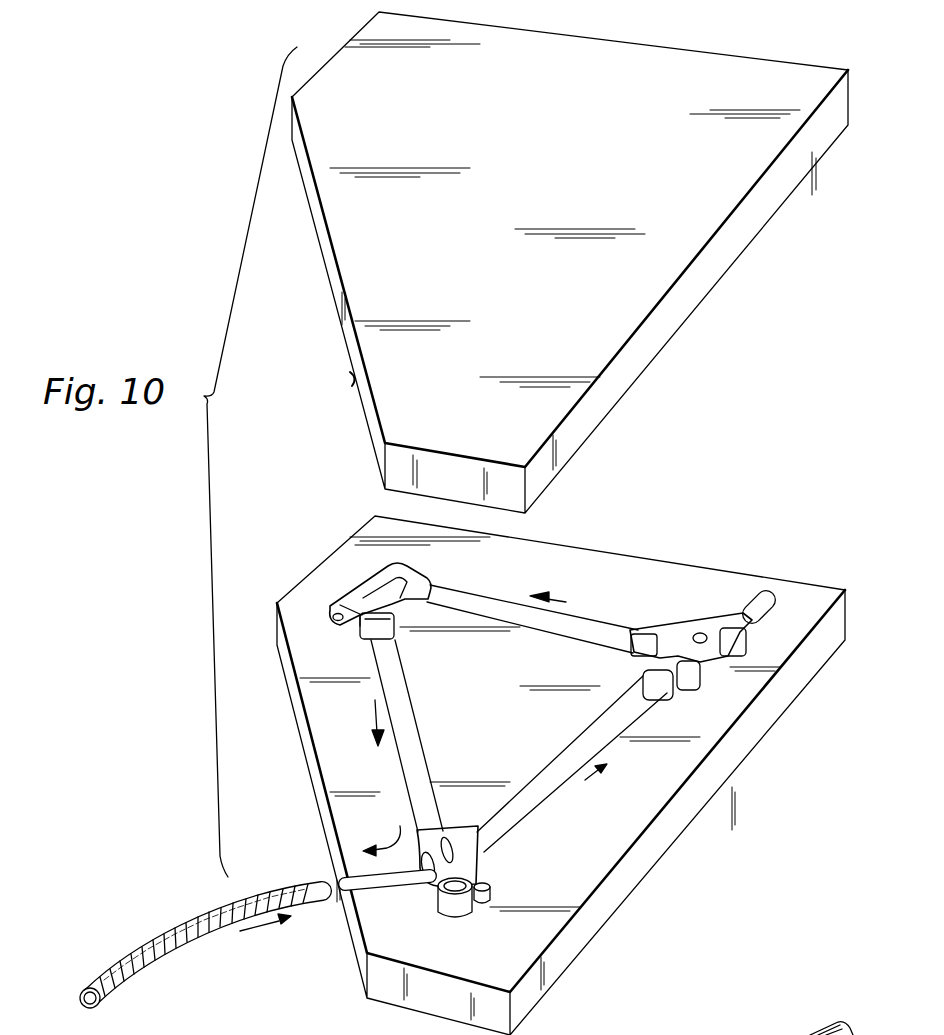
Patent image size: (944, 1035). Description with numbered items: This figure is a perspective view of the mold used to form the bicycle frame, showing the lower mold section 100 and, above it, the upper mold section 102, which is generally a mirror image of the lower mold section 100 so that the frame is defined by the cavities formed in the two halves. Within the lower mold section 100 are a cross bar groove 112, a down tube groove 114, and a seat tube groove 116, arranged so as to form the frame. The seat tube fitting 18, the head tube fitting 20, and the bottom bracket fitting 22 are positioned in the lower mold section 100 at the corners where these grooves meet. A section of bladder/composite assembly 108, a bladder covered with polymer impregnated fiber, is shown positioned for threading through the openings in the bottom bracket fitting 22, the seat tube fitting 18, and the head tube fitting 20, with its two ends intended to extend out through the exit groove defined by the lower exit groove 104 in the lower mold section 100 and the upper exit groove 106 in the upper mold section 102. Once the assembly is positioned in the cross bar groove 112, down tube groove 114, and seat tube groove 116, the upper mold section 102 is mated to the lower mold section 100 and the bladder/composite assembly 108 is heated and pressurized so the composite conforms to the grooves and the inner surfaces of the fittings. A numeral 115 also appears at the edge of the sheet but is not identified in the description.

The seat tube fitting 18 is at (697, 623).
The head tube fitting 20 is at (367, 587).
The bottom bracket fitting 22 is at (463, 853).
The lower mold section 100 is at (720, 775).
The upper mold section 102 is at (718, 267).
The lower exit groove 104 is at (372, 888).
The upper exit groove 106 is at (360, 382).
The bladder/composite assembly 108 is at (163, 956).
The cross bar groove 112 is at (542, 622).
The down tube groove 114 is at (403, 710).
The fragment 115 is at (788, 1023).
The seat tube groove 116 is at (547, 787).